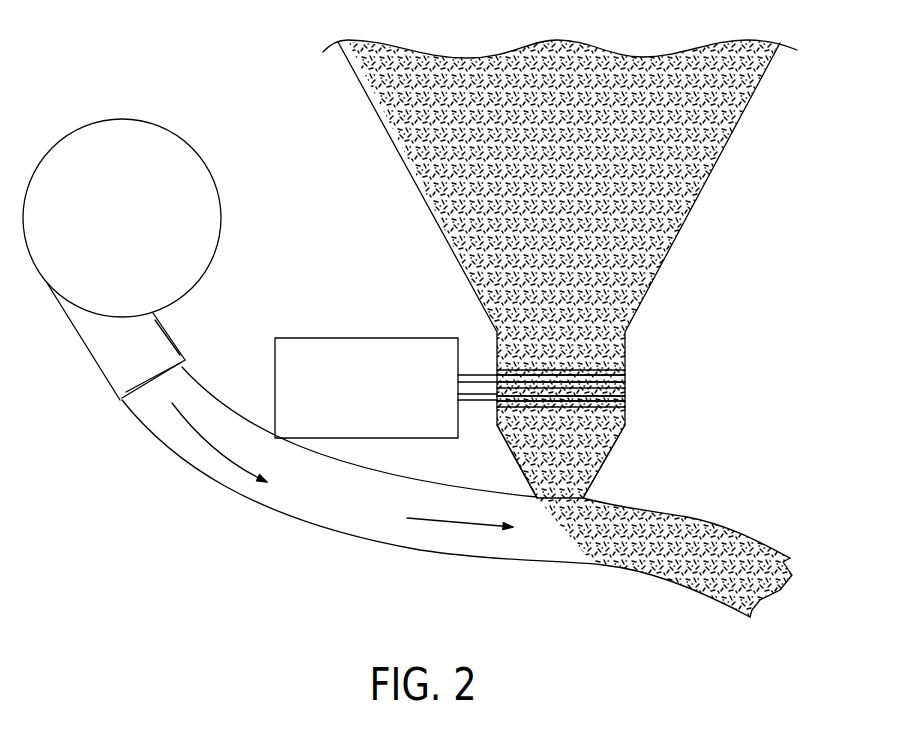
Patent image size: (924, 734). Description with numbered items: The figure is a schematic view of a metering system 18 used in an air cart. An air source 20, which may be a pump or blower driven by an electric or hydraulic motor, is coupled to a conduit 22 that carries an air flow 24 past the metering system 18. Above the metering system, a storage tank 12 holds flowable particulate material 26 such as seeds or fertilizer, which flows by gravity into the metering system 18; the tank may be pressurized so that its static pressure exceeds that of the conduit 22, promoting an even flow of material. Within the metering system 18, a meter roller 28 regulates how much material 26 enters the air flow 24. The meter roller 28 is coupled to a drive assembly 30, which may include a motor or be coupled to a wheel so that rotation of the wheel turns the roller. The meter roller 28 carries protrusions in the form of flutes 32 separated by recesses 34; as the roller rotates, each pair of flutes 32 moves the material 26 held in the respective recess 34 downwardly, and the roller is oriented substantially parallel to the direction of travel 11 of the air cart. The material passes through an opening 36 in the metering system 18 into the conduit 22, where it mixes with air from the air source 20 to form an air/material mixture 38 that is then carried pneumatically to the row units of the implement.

The direction of travel 11 is at (807, 371).
The storage tank 12 is at (363, 87).
The metering system 18 is at (640, 353).
The air source 20 is at (120, 119).
The conduit 22 is at (298, 528).
The air flow 24 is at (210, 448).
The flowable particulate material 26 is at (728, 103).
The meter roller 28 is at (590, 412).
The drive assembly 30 is at (360, 337).
The flutes 32 is at (597, 387).
The recesses 34 is at (625, 397).
The opening 36 is at (567, 497).
The air/material mixture 38 is at (687, 567).